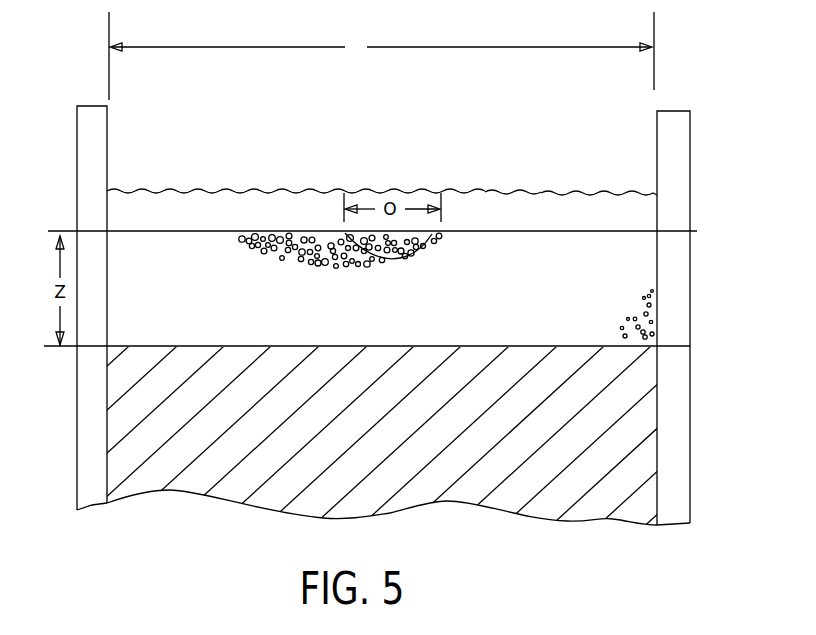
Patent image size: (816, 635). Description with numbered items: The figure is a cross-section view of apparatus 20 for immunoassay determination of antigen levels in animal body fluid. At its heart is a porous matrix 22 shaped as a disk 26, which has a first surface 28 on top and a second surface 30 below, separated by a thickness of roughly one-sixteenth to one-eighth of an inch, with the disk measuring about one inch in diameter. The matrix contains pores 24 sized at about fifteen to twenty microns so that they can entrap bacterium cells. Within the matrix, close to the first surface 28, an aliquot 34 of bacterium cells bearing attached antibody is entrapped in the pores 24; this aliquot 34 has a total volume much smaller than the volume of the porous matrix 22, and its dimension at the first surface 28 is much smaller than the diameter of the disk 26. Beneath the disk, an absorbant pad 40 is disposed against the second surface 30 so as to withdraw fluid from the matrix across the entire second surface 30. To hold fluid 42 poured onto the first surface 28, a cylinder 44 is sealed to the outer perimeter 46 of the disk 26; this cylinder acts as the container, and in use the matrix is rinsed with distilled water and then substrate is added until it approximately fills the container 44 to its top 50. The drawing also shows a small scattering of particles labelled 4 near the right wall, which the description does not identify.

The apparatus 20 is at (588, 70).
The cylinder 44 is at (83, 157).
The top 50 is at (658, 112).
The fluid 42 is at (138, 200).
The porous matrix 22 is at (185, 240).
The pore 24 is at (258, 238).
The disk 26 is at (509, 240).
The first surface 28 is at (557, 232).
The aliquot 34 is at (412, 240).
The outer perimeter 46 is at (648, 231).
The small bubbles 4 is at (655, 320).
The second surface 30 is at (650, 347).
The absorbant pad 40 is at (658, 448).